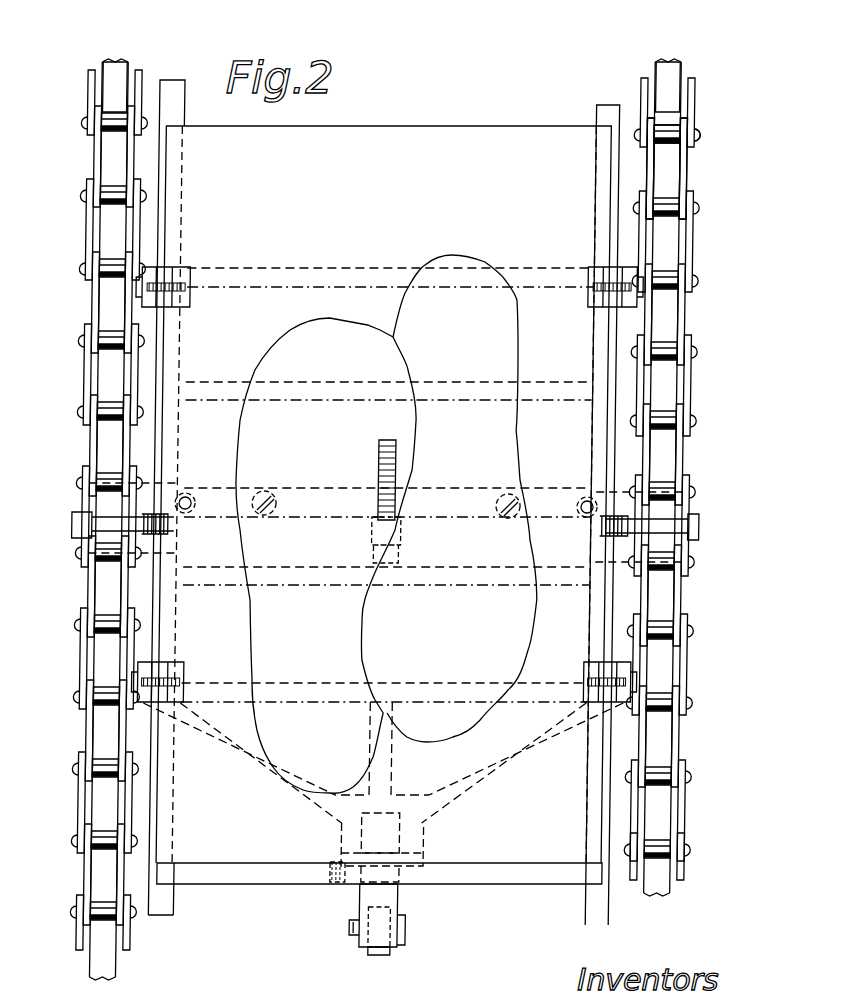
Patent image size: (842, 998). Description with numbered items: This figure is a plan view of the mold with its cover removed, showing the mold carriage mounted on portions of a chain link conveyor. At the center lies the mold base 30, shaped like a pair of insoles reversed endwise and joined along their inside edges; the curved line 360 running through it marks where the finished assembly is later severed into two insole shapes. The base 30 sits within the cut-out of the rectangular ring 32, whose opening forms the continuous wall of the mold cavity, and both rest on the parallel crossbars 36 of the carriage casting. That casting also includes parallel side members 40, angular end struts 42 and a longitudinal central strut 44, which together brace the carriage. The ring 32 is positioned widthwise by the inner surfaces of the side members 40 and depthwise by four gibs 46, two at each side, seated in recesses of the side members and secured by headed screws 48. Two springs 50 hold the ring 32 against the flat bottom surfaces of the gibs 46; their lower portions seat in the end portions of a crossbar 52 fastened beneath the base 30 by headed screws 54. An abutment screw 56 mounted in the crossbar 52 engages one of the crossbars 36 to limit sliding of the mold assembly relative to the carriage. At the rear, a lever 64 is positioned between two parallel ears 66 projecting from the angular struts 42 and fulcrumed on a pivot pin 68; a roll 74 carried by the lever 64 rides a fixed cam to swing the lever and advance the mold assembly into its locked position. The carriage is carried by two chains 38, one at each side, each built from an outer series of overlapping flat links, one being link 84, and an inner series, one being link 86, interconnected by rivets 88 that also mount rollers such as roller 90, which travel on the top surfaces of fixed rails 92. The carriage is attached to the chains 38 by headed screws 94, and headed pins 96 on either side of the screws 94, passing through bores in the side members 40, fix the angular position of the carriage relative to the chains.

The base 30 is at (307, 762).
The ring 32 is at (247, 875).
The crossbars 36 is at (462, 290).
The curved line 360 is at (374, 628).
The chains 38 is at (73, 234).
The side members 40 is at (177, 362).
The angular end struts 42 is at (225, 750).
The longitudinal central strut 44 is at (405, 745).
The gibs 46 is at (192, 270).
The headed screws 48 is at (192, 288).
The springs 50 is at (196, 494).
The crossbar 52 is at (306, 488).
The headed screws 54 is at (275, 518).
The abutment screw 56 is at (404, 468).
The lever 64 is at (410, 904).
The ears 66 is at (350, 840).
The pivot pin 68 is at (390, 882).
The roll 74 is at (387, 953).
The outer link 84 is at (690, 182).
The inner link 86 is at (646, 174).
The rivets 88 is at (698, 138).
The roller 90 is at (670, 128).
The fixed rails 92 is at (116, 70).
The headed screws 94 is at (76, 520).
The headed pins 96 is at (84, 484).